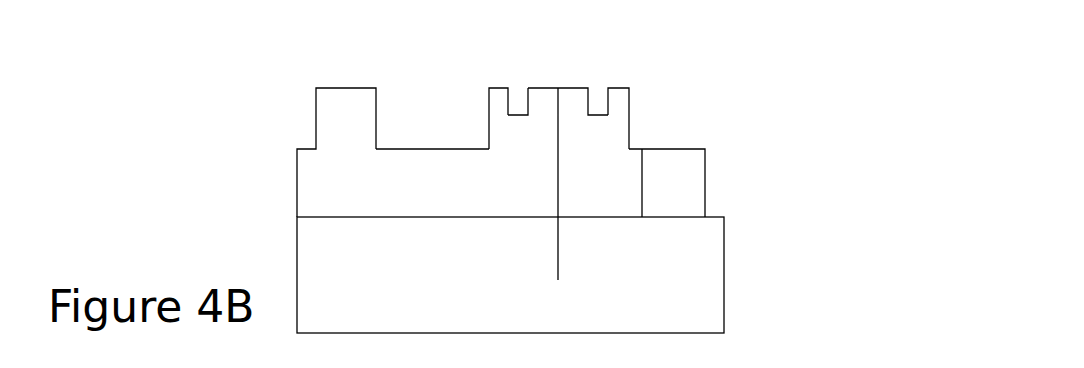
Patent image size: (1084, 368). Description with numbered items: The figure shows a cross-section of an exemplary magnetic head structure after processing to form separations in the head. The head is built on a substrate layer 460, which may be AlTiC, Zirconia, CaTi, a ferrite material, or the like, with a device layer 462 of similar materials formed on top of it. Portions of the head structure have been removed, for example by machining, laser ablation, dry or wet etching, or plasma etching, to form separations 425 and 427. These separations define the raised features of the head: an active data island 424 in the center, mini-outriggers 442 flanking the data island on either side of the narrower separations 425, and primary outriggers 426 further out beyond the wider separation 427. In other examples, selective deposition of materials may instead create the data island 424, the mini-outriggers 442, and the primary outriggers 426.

The substrate layer 460 is at (695, 269).
The device layer 462 is at (693, 195).
The primary outriggers 426 is at (346, 95).
The separation 427 is at (425, 95).
The mini-outriggers 442 is at (495, 95).
The separation 425 is at (514, 82).
The data island 424 is at (570, 97).